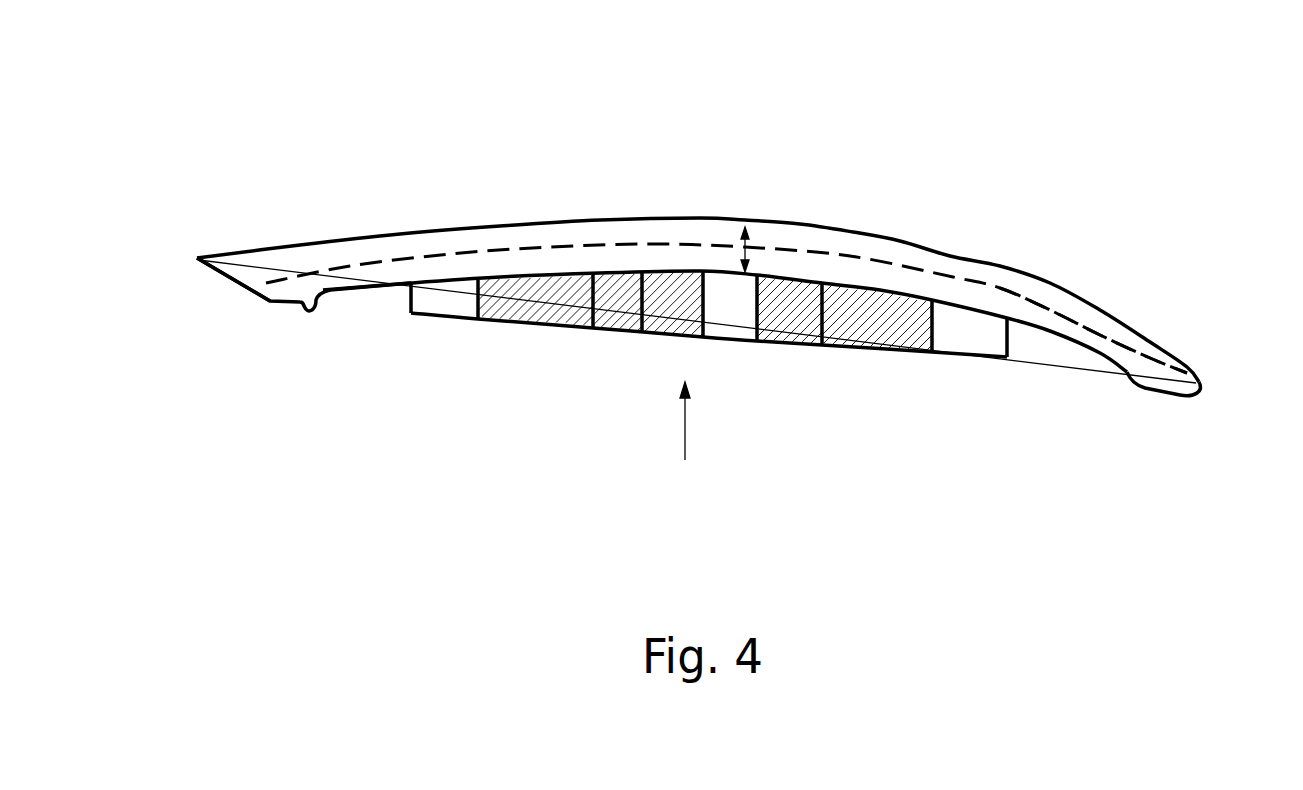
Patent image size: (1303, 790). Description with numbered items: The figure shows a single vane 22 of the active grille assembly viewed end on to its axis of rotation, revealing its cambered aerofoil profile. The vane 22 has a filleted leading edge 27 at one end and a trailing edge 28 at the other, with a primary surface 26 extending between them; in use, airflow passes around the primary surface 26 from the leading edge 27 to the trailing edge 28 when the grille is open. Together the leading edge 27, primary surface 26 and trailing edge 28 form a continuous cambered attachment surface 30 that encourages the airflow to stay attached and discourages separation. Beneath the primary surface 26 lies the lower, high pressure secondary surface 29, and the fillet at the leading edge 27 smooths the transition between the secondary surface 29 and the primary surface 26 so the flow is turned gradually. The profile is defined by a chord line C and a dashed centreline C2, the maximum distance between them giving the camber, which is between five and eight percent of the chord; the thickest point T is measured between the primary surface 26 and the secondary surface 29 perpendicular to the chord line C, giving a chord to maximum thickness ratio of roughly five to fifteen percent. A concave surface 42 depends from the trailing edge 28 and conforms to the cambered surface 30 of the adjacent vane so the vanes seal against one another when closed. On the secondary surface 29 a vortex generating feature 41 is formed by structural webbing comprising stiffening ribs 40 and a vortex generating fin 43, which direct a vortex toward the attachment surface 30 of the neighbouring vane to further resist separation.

The continuous cambered attachment surface 30 is at (702, 272).
The primary surface 26 is at (853, 232).
The vane 22 is at (953, 277).
The trailing edge 28 is at (199, 261).
The concave surface 42 is at (255, 288).
The secondary surface 29 is at (1082, 343).
The leading edge 27 is at (1197, 392).
The vortex generating fin 43 is at (608, 333).
The stiffening rib 40 is at (877, 322).
The vortex generating feature 41 is at (687, 435).
The chord line C is at (302, 272).
The centreline C2 is at (1072, 315).
The thickest point T is at (742, 248).